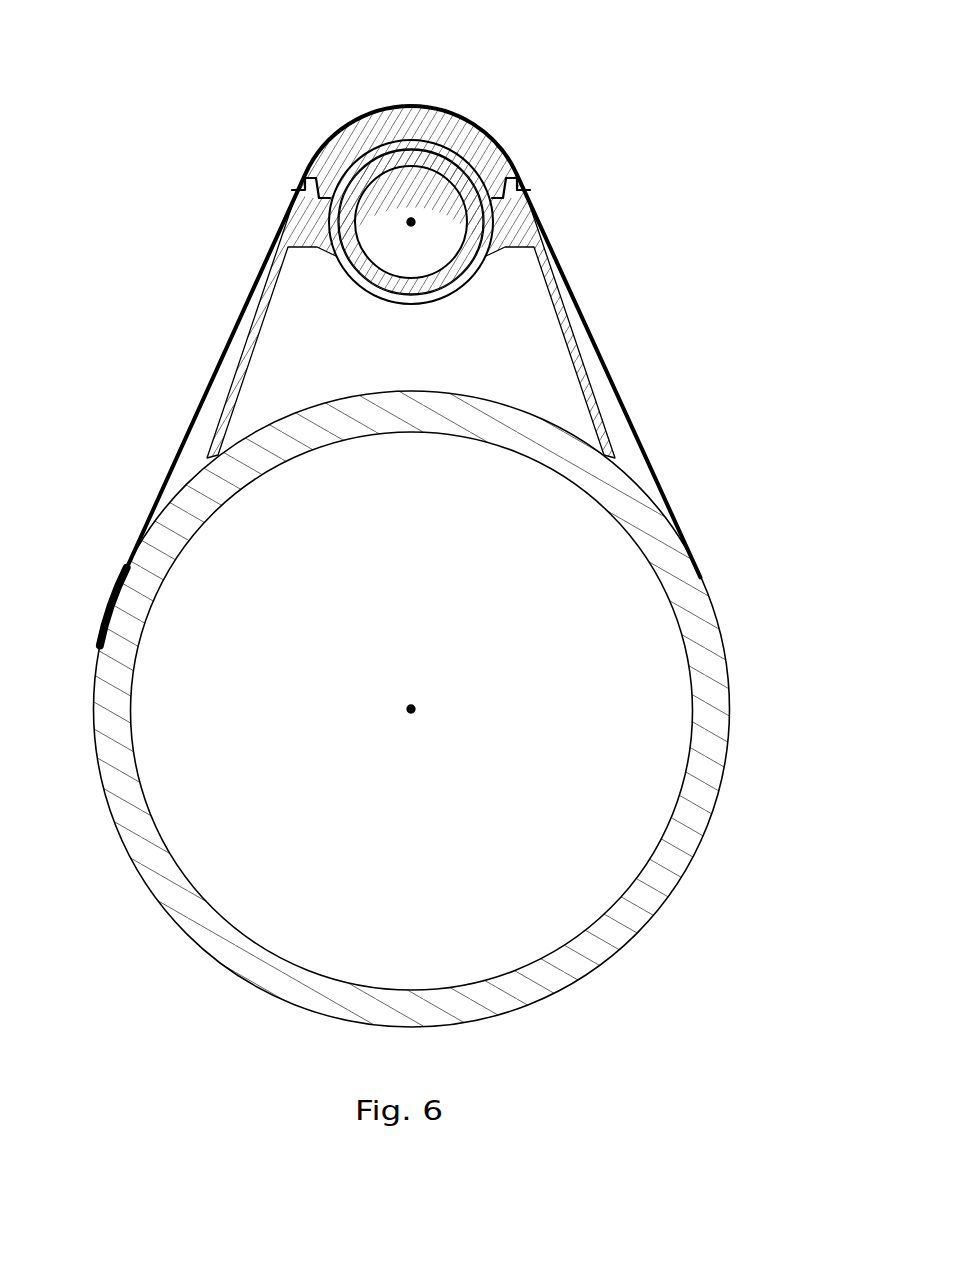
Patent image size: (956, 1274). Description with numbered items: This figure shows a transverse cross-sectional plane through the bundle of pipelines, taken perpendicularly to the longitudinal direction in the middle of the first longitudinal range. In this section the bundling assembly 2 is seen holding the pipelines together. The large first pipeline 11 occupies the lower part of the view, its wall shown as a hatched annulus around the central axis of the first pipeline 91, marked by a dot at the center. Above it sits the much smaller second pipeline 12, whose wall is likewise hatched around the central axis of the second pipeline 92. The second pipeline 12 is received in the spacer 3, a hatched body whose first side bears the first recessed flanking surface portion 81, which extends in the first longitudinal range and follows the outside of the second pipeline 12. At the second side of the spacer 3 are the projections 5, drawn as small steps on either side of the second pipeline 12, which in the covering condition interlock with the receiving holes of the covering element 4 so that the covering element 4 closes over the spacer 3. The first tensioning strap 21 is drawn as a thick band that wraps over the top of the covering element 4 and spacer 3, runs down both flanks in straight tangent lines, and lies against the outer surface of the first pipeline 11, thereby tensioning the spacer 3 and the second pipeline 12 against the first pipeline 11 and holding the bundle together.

The bundling assembly 2 is at (276, 82).
The spacer 3 is at (520, 225).
The covering element 4 is at (409, 128).
The projection 5 is at (292, 190).
The first pipeline 11 is at (713, 705).
The second pipeline 12 is at (437, 165).
The first tensioning strap 21 is at (625, 400).
The first recessed flanking surface portion 81 is at (451, 299).
The central axis of the first pipeline 91 is at (416, 709).
The central axis of the second pipeline 92 is at (409, 226).